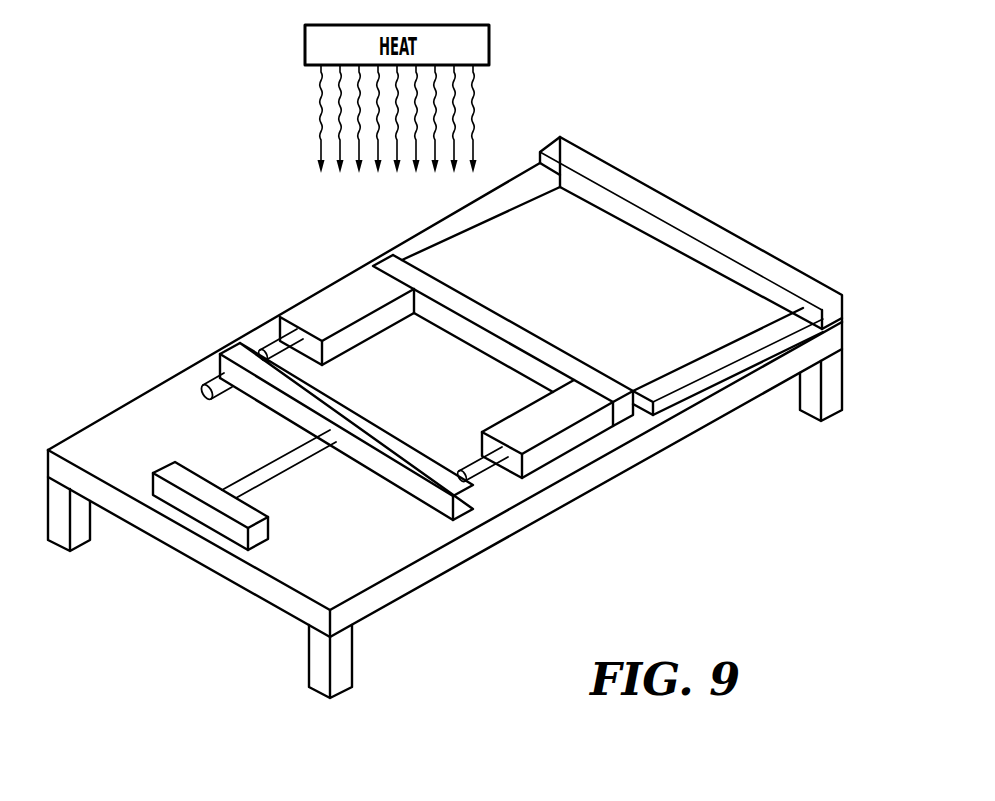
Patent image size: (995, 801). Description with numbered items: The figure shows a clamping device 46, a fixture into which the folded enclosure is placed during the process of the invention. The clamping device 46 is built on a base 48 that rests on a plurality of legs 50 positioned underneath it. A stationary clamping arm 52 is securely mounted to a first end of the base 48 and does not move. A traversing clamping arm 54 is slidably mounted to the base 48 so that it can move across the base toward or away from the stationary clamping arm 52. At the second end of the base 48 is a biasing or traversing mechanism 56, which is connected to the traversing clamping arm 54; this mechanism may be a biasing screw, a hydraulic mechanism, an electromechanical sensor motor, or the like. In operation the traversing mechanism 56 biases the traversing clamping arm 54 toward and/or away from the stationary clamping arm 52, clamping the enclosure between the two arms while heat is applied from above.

The clamping device 46 is at (456, 413).
The base 48 is at (562, 495).
The legs 50 is at (80, 537).
The stationary clamping arm 52 is at (685, 217).
The traversing clamping arm 54 is at (500, 330).
The traversing mechanism 56 is at (278, 465).